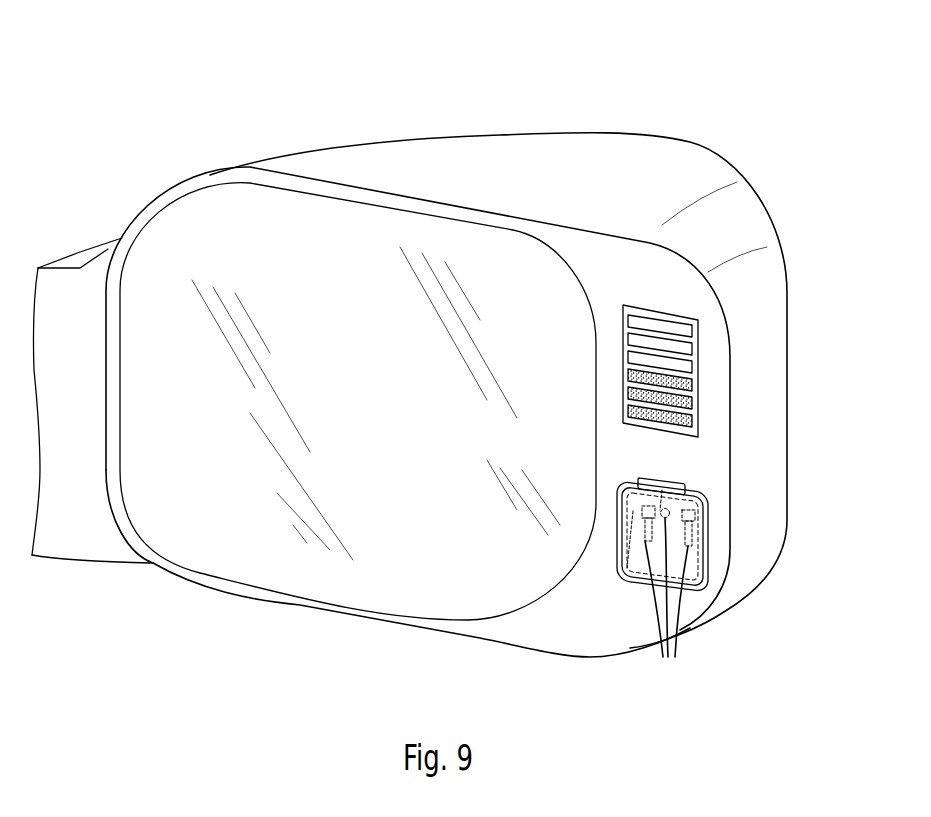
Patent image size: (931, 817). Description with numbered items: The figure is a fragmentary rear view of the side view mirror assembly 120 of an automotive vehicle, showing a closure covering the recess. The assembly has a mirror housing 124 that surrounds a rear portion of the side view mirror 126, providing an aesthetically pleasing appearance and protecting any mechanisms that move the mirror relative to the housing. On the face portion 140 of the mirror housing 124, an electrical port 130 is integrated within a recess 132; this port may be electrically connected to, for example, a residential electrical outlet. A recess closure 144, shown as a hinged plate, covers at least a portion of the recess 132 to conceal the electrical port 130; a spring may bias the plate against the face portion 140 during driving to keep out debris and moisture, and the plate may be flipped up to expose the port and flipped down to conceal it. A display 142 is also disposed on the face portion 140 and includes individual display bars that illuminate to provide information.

The side view mirror assembly 120 is at (335, 84).
The mirror housing 124 is at (643, 150).
The side view mirror 126 is at (182, 197).
The electrical port 130 is at (666, 602).
The recess 132 is at (697, 522).
The face portion 140 is at (663, 292).
The display 142 is at (698, 377).
The recess closure 144 is at (703, 550).